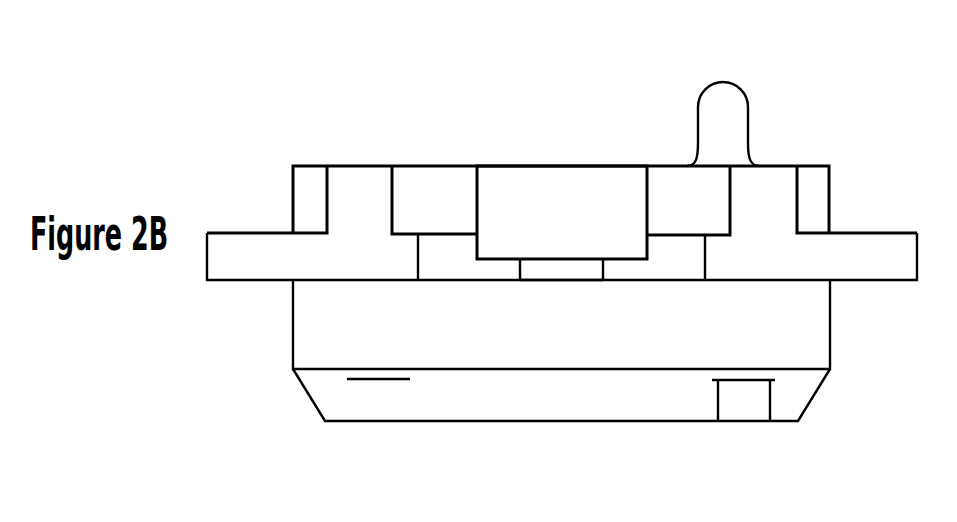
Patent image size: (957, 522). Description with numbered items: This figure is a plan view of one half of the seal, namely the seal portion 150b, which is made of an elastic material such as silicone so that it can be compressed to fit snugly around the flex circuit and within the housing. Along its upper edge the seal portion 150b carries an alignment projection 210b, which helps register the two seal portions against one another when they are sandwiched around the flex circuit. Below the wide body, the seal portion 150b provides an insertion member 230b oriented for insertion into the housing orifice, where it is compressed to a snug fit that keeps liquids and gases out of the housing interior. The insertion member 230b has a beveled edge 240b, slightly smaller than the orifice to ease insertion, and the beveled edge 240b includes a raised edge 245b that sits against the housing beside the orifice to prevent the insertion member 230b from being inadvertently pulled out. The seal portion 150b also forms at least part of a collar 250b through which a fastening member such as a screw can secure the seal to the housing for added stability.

The seal portion 150b is at (466, 113).
The alignment projection 210b is at (723, 82).
The insertion member 230b is at (281, 335).
The beveled edge 240b is at (310, 400).
The raised edge 245b is at (742, 421).
The collar 250b is at (500, 298).